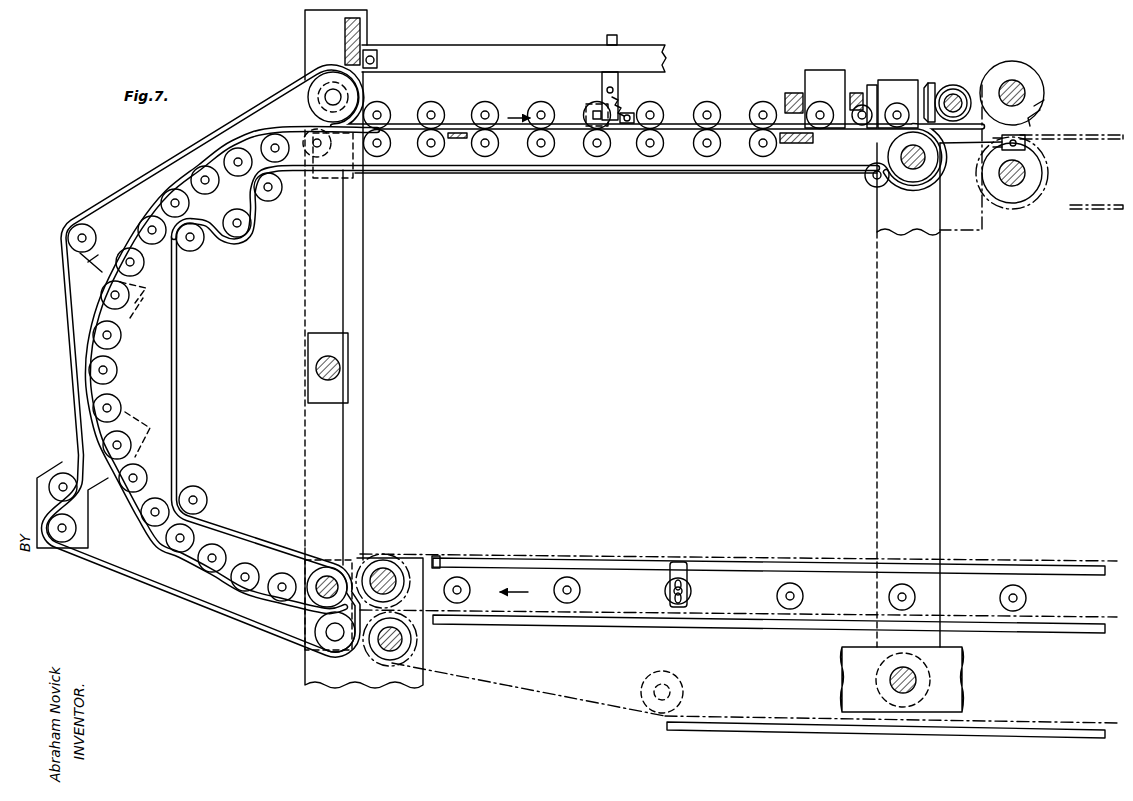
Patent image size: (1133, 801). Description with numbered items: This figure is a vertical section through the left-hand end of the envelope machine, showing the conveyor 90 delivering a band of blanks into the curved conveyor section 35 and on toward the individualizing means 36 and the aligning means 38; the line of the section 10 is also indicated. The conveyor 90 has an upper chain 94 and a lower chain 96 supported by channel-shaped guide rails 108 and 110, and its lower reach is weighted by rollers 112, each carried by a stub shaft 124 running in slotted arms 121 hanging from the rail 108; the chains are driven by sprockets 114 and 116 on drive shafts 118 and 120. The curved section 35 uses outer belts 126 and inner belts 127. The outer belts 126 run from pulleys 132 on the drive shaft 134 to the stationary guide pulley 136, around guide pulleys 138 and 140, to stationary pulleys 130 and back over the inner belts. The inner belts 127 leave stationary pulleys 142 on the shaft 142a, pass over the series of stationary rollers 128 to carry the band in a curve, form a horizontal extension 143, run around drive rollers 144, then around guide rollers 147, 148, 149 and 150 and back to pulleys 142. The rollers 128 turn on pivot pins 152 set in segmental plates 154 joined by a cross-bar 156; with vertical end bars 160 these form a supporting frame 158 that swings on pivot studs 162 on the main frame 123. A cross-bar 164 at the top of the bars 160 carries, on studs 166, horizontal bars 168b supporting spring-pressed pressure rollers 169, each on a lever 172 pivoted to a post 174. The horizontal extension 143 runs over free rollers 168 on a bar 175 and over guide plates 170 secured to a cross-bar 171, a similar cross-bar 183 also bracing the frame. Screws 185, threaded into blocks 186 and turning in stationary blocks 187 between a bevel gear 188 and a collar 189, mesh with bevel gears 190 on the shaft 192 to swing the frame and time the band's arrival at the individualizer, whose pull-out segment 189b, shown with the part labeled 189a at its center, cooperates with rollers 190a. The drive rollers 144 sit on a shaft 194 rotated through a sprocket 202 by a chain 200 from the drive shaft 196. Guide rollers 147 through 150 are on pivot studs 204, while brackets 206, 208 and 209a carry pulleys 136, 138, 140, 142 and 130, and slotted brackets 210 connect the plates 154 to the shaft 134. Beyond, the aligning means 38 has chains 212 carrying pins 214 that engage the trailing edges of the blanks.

The section line 10 is at (930, 64).
The curved conveyor section 35 is at (248, 526).
The individualizing means 36 is at (1038, 72).
The aligning means 38 is at (1105, 130).
The conveyor 90 is at (766, 553).
The upper chain 94 is at (578, 556).
The lower chain 96 is at (540, 690).
The guide rail 108 is at (745, 575).
The guide rail 110 is at (745, 626).
The rollers 112 is at (665, 591).
The sprocket 114 is at (383, 565).
The sprocket 116 is at (380, 658).
The drive shaft 118 is at (392, 576).
The drive shaft 120 is at (403, 640).
The arms 121 is at (676, 563).
The main frame 123 is at (963, 232).
The stub shaft 124 is at (690, 592).
The outer belts 126 is at (196, 156).
The inner belts 127 is at (167, 347).
The stationary rollers 128 is at (135, 442).
The stationary pulleys 130 is at (322, 640).
The pulleys 132 is at (330, 98).
The drive shaft 134 is at (352, 95).
The stationary guide pulley 136 is at (92, 232).
The guide pulley 138 is at (50, 487).
The guide pulley 140 is at (77, 529).
The stationary pulleys 142 is at (325, 566).
The shaft 142a is at (328, 545).
The horizontal extension 143 is at (662, 126).
The drive rollers 144 is at (905, 170).
The guide roller 147 is at (269, 198).
The guide roller 148 is at (234, 212).
The guide roller 149 is at (190, 248).
The guide roller 150 is at (204, 500).
The pivot pins 152 is at (180, 540).
The segmental plates 154 is at (340, 445).
The cross-bar 156 is at (340, 366).
The supporting frame 158 is at (348, 425).
The vertical end bars 160 is at (363, 272).
The pivot stud 162 is at (312, 620).
The cross-bar 164 is at (362, 28).
The studs 166 is at (377, 60).
The rollers 168 is at (594, 152).
The horizontal bars 168b is at (568, 52).
The pressure rollers 169 is at (588, 110).
The guide plates 170 is at (820, 134).
The cross-bar 171 is at (806, 145).
The spring biased lever 172 is at (612, 122).
The post 174 is at (618, 81).
The bar 175 is at (683, 156).
The cross-bar 183 is at (459, 140).
The screws 185 is at (795, 95).
The blocks 186 is at (826, 72).
The stationary block 187 is at (894, 84).
The bevel gear 188 is at (932, 84).
The collar 189 is at (870, 88).
The shaft 189a is at (1026, 94).
The pull-out segment 189b is at (1010, 62).
The bevel gears 190 is at (1000, 72).
The cooperative rollers 190a is at (1095, 125).
The shaft 192 is at (958, 92).
The shaft 194 is at (930, 165).
The drive shaft 196 is at (912, 670).
The chain 200 is at (938, 418).
The sprocket 202 is at (866, 172).
The pivot studs 204 is at (254, 232).
The brackets 206 is at (97, 262).
The brackets 208 is at (62, 463).
The bracket 209a is at (372, 545).
The brackets 210 is at (290, 128).
The chains 212 is at (1078, 205).
The pins 214 is at (995, 212).